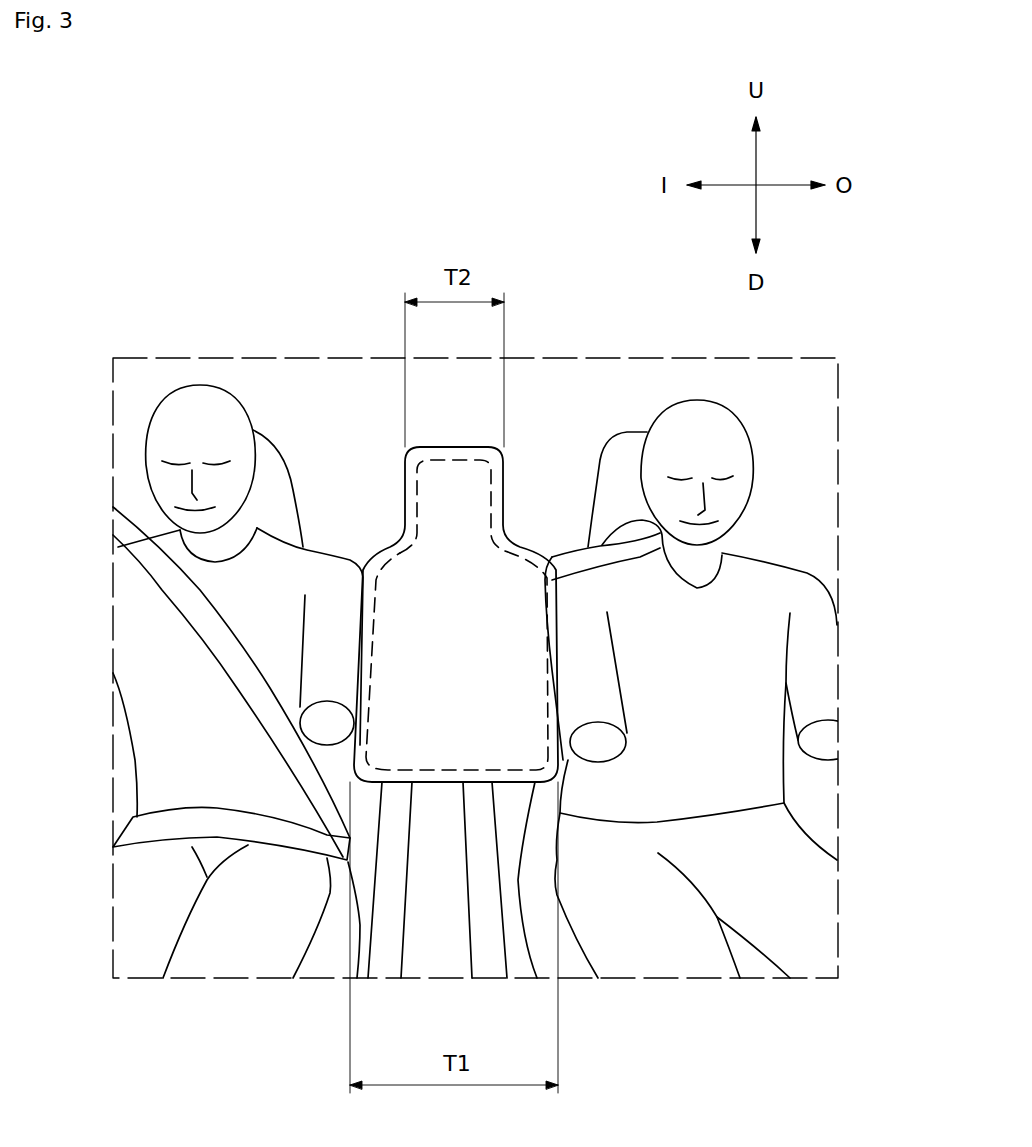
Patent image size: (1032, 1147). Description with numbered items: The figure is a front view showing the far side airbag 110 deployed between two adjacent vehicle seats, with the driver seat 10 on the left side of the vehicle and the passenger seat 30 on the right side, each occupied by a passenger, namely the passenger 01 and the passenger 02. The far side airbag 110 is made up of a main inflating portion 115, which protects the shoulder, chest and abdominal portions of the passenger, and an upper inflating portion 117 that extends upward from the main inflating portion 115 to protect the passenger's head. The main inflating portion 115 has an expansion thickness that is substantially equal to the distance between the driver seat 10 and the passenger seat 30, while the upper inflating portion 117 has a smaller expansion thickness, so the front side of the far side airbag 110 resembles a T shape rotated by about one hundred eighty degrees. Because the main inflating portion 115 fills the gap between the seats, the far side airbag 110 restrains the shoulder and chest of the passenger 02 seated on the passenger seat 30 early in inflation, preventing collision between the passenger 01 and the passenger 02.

The far side airbag 110 is at (457, 440).
The upper inflating portion 117 is at (462, 497).
The main inflating portion 115 is at (509, 663).
The passenger 01 is at (742, 703).
The passenger 02 is at (163, 692).
The driver seat 10 is at (543, 947).
The passenger seat 30 is at (335, 947).